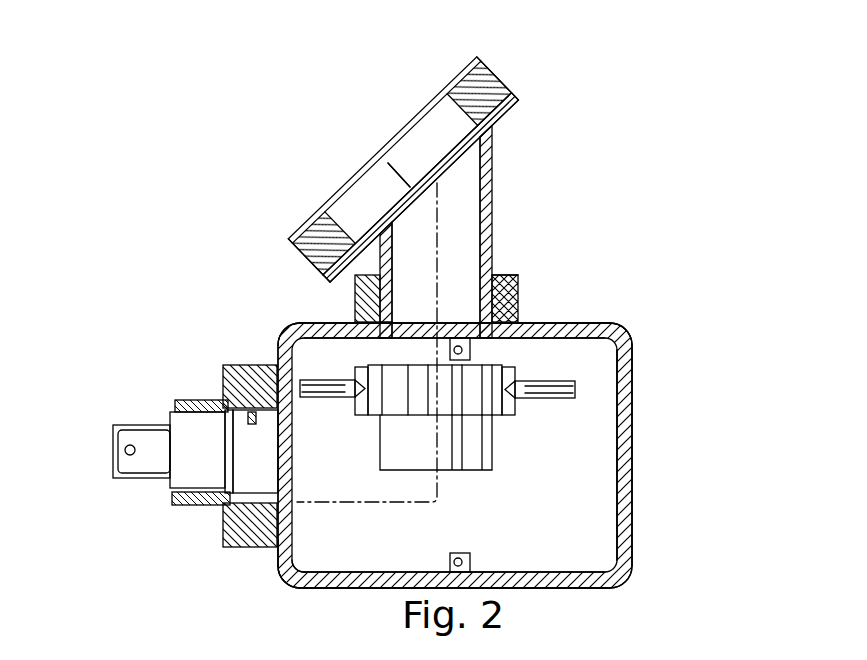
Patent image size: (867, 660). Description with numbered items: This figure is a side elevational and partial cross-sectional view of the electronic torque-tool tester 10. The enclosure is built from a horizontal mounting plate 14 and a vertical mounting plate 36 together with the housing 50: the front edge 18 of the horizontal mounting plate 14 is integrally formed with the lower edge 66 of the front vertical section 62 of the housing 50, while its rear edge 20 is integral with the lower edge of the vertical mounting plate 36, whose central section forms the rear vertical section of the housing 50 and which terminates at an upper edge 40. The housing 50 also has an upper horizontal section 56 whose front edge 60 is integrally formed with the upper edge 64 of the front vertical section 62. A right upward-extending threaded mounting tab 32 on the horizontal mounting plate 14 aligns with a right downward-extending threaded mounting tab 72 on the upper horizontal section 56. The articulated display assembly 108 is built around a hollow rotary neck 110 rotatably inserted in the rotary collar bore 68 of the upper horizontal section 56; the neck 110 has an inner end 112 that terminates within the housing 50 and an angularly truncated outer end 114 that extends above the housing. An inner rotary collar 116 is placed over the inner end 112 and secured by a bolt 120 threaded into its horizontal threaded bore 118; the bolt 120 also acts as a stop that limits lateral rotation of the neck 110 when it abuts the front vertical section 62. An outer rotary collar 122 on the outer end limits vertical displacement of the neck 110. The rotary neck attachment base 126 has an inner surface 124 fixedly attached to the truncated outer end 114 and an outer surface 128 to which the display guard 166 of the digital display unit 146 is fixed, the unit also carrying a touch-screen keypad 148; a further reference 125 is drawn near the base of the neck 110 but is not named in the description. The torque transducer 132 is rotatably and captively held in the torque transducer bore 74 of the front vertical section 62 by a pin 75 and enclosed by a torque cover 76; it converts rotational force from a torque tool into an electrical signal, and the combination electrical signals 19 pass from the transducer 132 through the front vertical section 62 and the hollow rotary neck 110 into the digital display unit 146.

The electronic torque-tool tester 10 is at (287, 43).
The horizontal mounting plate 14 is at (513, 573).
The front edge 18 is at (280, 565).
The combination electrical signals 19 is at (350, 503).
The rear edge 20 is at (615, 572).
The right upward-extending threaded mounting tab 32 is at (467, 553).
The vertical mounting plate 36 is at (627, 428).
The upper edge 40 is at (623, 325).
The housing 50 is at (583, 317).
The upper horizontal section 56 is at (545, 322).
The front edge 60 is at (290, 325).
The front vertical section 62 is at (278, 548).
The upper edge 64 is at (350, 278).
The lower edge 66 is at (298, 566).
The rotary collar bore 68 is at (510, 273).
The right downward-extending threaded mounting tab 72 is at (522, 318).
The torque transducer bore 74 is at (247, 500).
The pin 75 is at (213, 403).
The torque cover 76 is at (237, 373).
The articulated display assembly 108 is at (503, 180).
The hollow rotary neck 110 is at (490, 157).
The inner end 112 is at (490, 473).
The outer end 114 is at (495, 130).
The inner rotary collar 116 is at (492, 380).
The horizontal threaded bore 118 is at (515, 400).
The bolt 120 is at (575, 388).
The outer rotary collar 122 is at (500, 277).
The inner surface 124 is at (390, 324).
The tube flange 125 is at (380, 328).
The rotary neck attachment base 126 is at (516, 98).
The outer surface 128 is at (407, 180).
The torque transducer 132 is at (200, 433).
The digital display unit 146 is at (303, 212).
The touch-screen keypad 148 is at (465, 75).
The display guard 166 is at (418, 140).